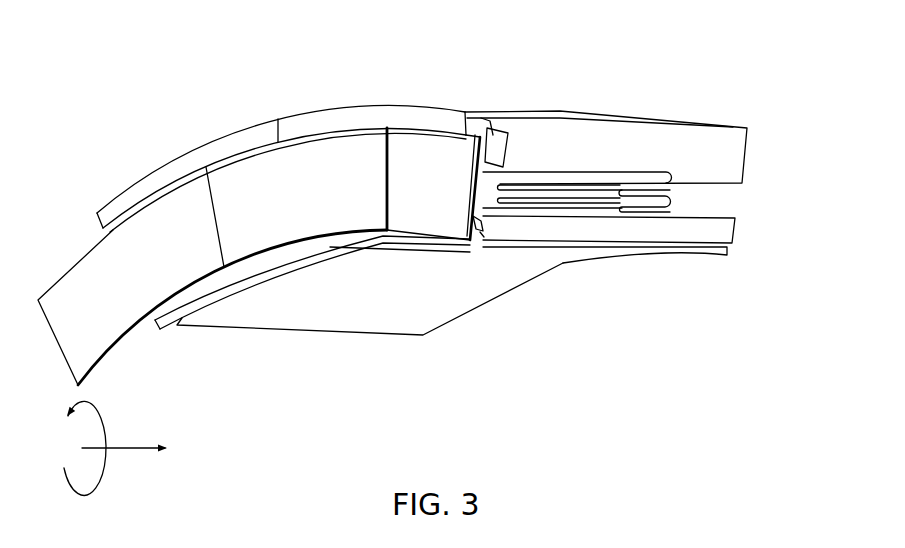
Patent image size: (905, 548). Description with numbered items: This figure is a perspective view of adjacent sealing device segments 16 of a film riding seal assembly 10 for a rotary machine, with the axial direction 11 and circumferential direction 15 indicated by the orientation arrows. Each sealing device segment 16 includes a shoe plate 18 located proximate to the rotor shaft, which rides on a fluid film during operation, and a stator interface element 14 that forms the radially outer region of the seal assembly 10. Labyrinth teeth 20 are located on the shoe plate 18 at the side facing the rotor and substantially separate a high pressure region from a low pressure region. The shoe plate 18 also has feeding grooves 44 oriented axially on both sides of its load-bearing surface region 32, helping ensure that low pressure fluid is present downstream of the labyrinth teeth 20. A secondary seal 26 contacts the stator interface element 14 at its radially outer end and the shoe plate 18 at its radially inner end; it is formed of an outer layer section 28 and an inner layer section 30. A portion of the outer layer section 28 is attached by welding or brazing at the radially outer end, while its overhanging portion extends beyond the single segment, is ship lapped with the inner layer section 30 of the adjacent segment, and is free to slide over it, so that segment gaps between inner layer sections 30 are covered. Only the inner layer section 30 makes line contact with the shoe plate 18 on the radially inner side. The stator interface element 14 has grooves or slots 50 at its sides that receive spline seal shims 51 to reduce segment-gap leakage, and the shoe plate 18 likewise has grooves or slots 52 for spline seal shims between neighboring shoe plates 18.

The film riding seal assembly 10 is at (652, 57).
The axial direction 11 is at (143, 452).
The stator interface element 14 is at (733, 153).
The circumferential direction 15 is at (82, 495).
The sealing device segment 16 is at (293, 112).
The shoe plate 18 is at (733, 233).
The labyrinth teeth 20 is at (477, 238).
The secondary seal 26 is at (118, 305).
The outer layer section 28 is at (110, 290).
The inner layer section 30 is at (452, 213).
The load-bearing surface region 32 is at (333, 317).
The feeding grooves 44 is at (664, 249).
The grooves or slots 50 is at (492, 123).
The spline seal shims 51 is at (510, 147).
The grooves or slots 52 is at (482, 226).